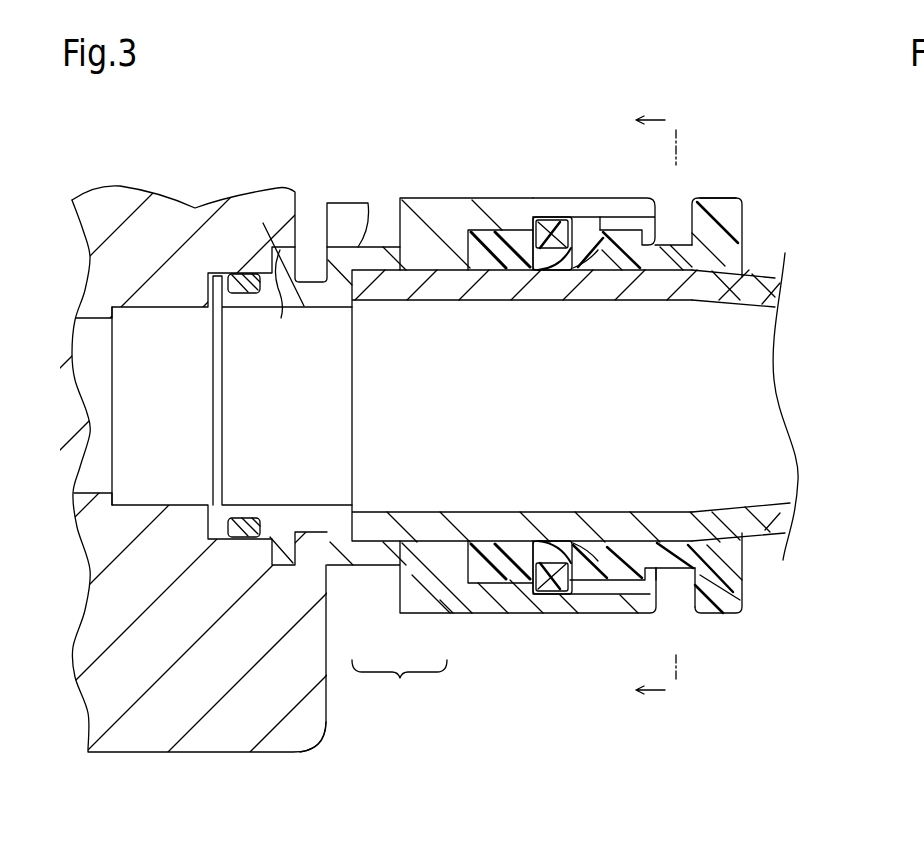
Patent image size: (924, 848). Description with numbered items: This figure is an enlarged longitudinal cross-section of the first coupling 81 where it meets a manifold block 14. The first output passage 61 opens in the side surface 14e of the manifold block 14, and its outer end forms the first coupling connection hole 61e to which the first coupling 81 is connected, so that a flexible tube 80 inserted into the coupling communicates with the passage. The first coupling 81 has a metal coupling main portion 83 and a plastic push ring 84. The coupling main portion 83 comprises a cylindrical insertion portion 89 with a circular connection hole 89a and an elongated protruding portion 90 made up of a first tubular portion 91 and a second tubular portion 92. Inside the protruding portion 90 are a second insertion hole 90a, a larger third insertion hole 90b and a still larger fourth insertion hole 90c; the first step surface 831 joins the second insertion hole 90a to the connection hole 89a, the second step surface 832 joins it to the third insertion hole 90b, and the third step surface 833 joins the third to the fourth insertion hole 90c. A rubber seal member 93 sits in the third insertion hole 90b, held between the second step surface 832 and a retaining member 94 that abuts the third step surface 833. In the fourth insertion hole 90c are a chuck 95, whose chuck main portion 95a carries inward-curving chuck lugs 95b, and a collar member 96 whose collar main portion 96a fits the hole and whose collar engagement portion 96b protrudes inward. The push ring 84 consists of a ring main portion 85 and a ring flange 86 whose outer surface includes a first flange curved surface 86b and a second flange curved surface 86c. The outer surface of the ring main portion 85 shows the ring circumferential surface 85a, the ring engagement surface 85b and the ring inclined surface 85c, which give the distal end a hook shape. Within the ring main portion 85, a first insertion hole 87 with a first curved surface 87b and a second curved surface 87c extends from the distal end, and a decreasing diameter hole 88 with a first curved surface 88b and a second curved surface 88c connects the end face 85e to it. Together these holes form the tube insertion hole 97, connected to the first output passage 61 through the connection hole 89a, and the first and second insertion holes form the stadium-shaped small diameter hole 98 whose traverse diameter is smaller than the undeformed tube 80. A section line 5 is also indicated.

The section line V-V 5 is at (642, 406).
The manifold block 14 is at (176, 200).
The side surface 14e is at (327, 700).
The first output passage 61 is at (92, 333).
The first coupling connection hole 61e is at (236, 273).
The tube 80 is at (758, 270).
The first coupling 81 is at (733, 171).
The coupling main portion 83 is at (440, 198).
The first step surface 831 is at (363, 300).
The second step surface 832 is at (470, 300).
The third step surface 833 is at (542, 290).
The push ring 84 is at (746, 204).
The ring main portion 85 is at (640, 613).
The ring circumferential surface 85a is at (672, 244).
The ring engagement surface 85b is at (640, 226).
The ring inclined surface 85c is at (600, 198).
The end face 85e is at (748, 553).
The ring flange 86 is at (733, 613).
The first flange curved surface 86b is at (722, 196).
The second flange curved surface 86c is at (706, 613).
The first insertion hole 87 is at (600, 613).
The first curved surface 87b is at (630, 292).
The second curved surface 87c is at (615, 542).
The decreasing diameter hole 88 is at (742, 588).
The first curved surface 88b is at (735, 298).
The second curved surface 88c is at (714, 520).
The insertion portion 89 is at (265, 543).
The connection hole 89a is at (236, 284).
The protruding portion 90 is at (491, 630).
The second insertion hole 90a is at (395, 530).
The third insertion hole 90b is at (497, 545).
The fourth insertion hole 90c is at (535, 613).
The first tubular portion 91 is at (387, 600).
The second tubular portion 92 is at (418, 600).
The seal member 93 is at (500, 230).
The retaining member 94 is at (530, 228).
The chuck 95 is at (555, 218).
The chuck main portion 95a is at (550, 595).
The chuck lugs 95b is at (558, 278).
The collar member 96 is at (586, 620).
The collar main portion 96a is at (580, 230).
The collar engagement portion 96b is at (675, 290).
The tube insertion hole 97 is at (440, 613).
The small diameter hole 98 is at (668, 573).